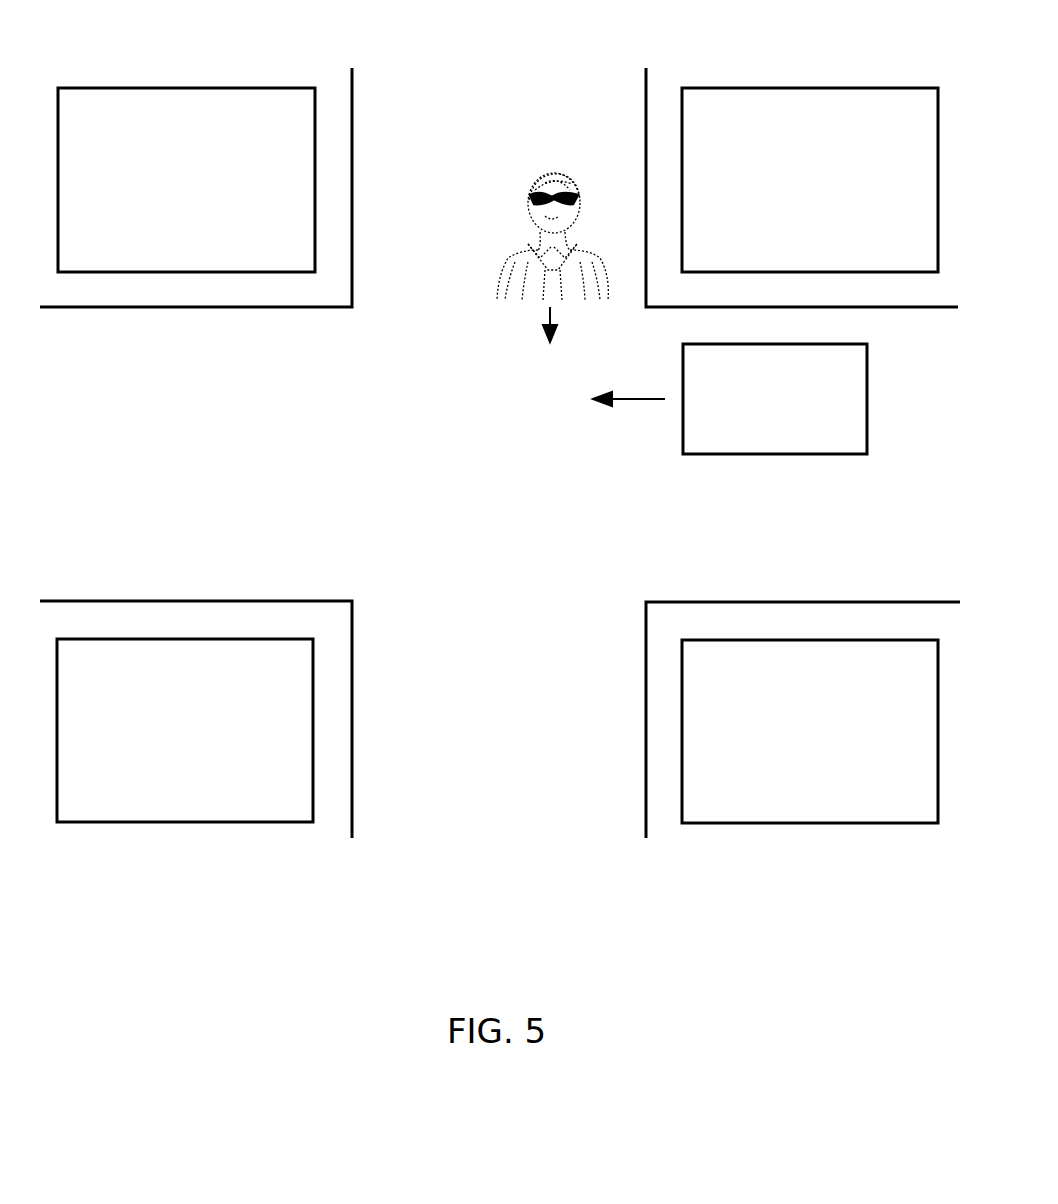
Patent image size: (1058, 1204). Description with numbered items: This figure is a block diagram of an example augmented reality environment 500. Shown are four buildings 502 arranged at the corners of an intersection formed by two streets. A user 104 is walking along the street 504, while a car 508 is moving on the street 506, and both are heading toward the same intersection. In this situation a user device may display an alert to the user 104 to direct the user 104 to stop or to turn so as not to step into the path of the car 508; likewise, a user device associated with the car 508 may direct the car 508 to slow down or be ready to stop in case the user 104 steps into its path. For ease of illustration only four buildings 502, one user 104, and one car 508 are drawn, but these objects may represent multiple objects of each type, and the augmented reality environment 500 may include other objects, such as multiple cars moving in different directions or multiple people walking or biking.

The user 104 is at (578, 247).
The augmented reality environment 500 is at (517, 969).
The buildings 502 is at (225, 88).
The street 504 is at (502, 90).
The street 506 is at (183, 438).
The car 508 is at (825, 456).